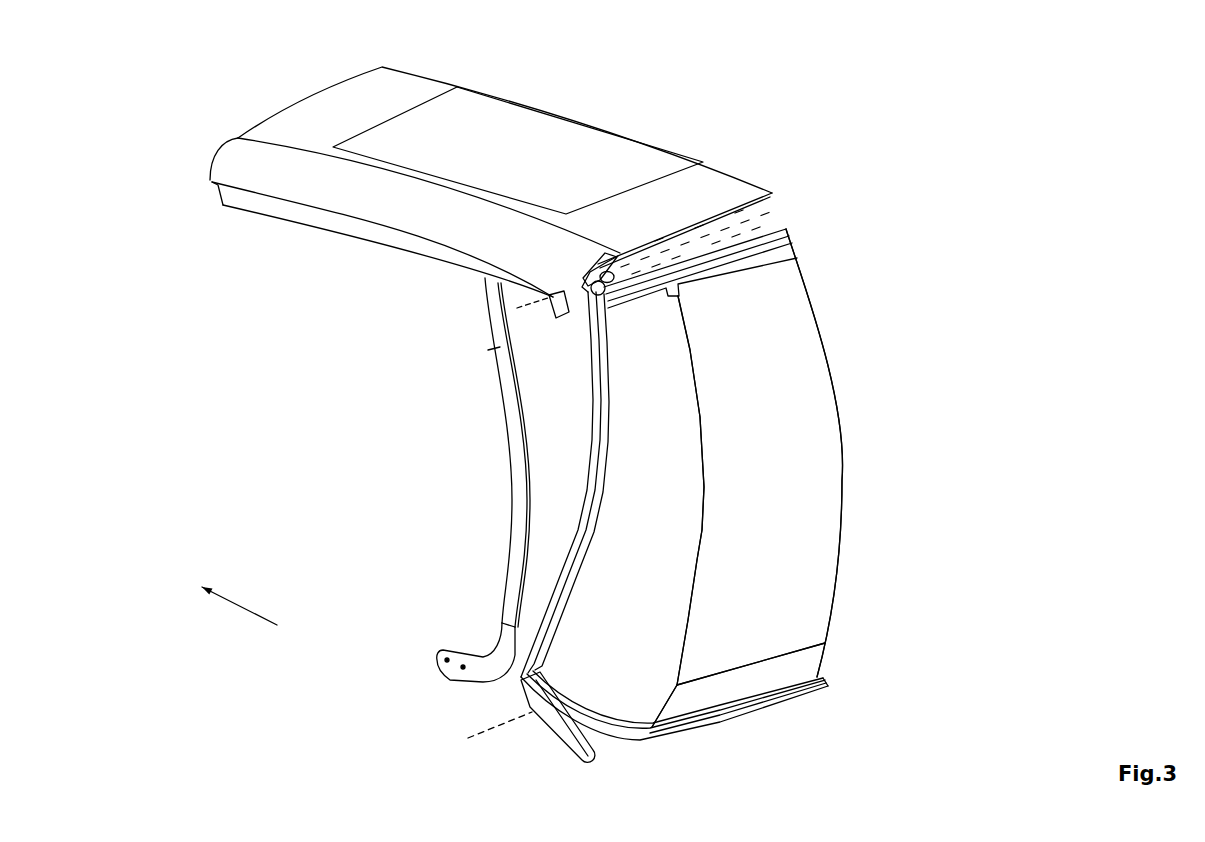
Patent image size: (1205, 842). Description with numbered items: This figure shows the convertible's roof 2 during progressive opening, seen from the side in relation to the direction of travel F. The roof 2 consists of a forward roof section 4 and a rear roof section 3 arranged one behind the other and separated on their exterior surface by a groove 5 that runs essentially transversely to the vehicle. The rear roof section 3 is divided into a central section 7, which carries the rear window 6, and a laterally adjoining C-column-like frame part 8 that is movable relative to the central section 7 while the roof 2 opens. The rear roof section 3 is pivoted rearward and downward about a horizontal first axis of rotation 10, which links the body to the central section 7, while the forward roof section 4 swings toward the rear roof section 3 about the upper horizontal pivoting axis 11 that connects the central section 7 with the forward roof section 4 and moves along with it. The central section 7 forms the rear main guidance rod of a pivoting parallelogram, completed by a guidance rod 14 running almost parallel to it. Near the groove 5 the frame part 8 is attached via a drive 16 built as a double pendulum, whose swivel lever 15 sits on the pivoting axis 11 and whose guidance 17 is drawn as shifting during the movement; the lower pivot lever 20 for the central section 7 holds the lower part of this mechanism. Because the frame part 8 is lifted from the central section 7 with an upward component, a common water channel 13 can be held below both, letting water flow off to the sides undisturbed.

The roof 2 is at (817, 98).
The rear roof section 3 is at (817, 305).
The forward roof section 4 is at (678, 148).
The groove 5 is at (782, 207).
The rear window 6 is at (804, 497).
The central section 7 is at (802, 385).
The frame part 8 is at (652, 513).
The first axis of rotation 10 is at (502, 724).
The second upper horizontal pivoting axis 11 is at (680, 248).
The water channel 13 is at (733, 718).
The guidance rod 14 is at (512, 493).
The swivel lever 15 is at (590, 300).
The drive 16 is at (588, 444).
The guidance 17 is at (578, 306).
The lower pivot lever 20 is at (563, 738).
The direction of travel F is at (248, 610).